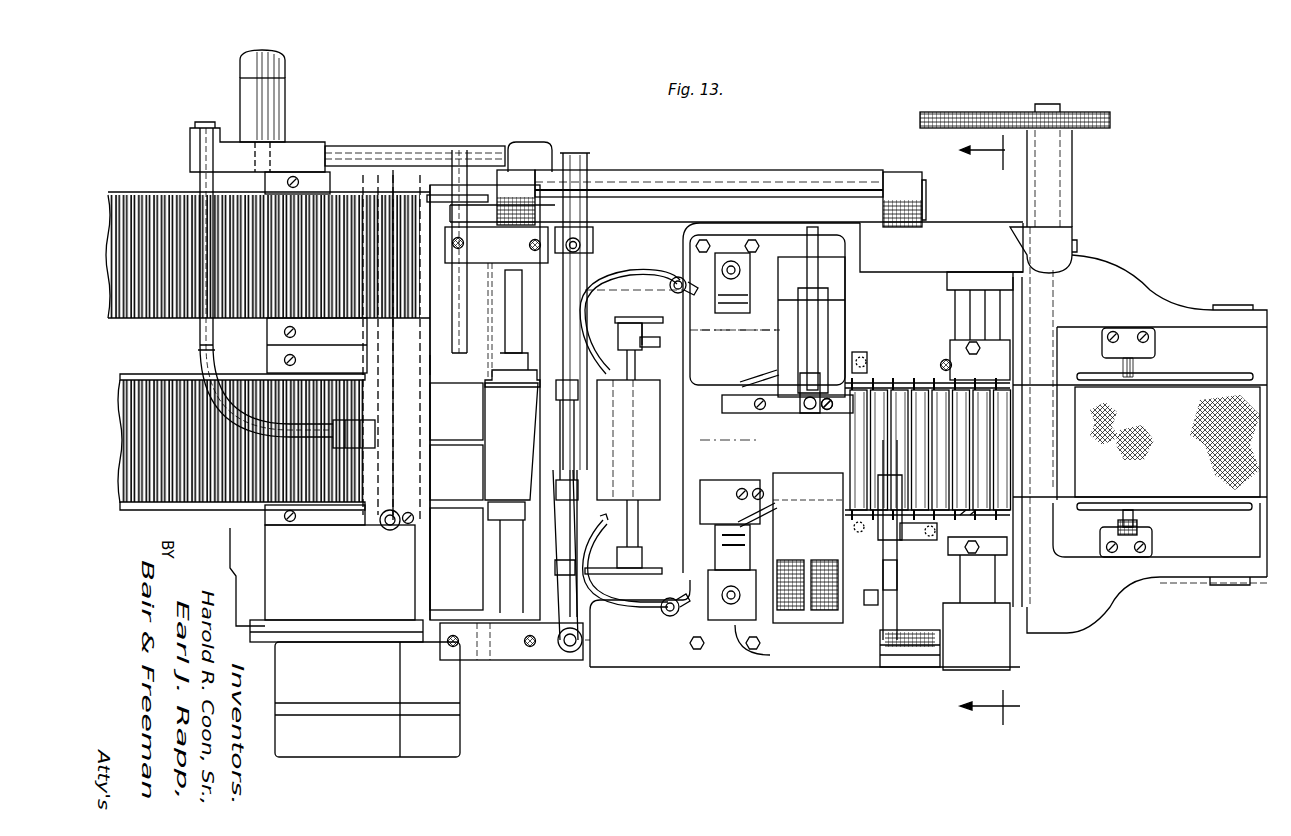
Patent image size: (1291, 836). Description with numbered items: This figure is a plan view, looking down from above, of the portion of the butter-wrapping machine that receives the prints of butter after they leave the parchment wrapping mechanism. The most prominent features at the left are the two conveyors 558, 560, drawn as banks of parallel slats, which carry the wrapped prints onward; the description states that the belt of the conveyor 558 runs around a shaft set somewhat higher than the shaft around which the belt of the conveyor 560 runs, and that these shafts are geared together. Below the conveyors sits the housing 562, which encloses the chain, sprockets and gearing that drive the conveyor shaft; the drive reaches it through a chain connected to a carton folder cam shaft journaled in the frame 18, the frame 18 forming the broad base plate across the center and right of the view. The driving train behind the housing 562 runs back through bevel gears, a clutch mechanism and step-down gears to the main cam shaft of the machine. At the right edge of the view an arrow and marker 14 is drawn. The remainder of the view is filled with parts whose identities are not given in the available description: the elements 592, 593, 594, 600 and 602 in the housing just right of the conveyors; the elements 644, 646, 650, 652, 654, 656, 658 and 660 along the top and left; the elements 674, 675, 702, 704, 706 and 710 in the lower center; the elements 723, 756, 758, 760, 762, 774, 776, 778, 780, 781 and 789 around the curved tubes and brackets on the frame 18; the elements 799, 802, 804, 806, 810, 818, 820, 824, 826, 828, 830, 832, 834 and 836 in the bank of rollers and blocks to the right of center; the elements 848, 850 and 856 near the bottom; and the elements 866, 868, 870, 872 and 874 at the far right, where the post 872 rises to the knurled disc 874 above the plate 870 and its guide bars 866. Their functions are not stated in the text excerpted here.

The conveyor 558 is at (162, 198).
The conveyor 560 is at (155, 388).
The housing 562 is at (378, 595).
The housing 592 is at (470, 425).
The housing wall 593 is at (453, 365).
The slide member 594 is at (475, 330).
The vertical rod 600 is at (459, 188).
The cap block 602 is at (444, 178).
The knurled knob 644 is at (285, 102).
The horizontal bar 646 is at (401, 150).
The vertical cylinder 650 is at (620, 173).
The horizontal rod 652 is at (777, 184).
The collar 654 is at (523, 178).
The pipe 656 is at (199, 333).
The bolt 658 is at (303, 460).
The lower housing section 660 is at (470, 500).
The housing section 674 is at (495, 445).
The spacer 675 is at (510, 372).
The rod 702 is at (557, 550).
The clamp 704 is at (555, 393).
The guide 706 is at (515, 440).
The housing 710 is at (640, 500).
The plate edge 723 is at (787, 666).
The tube clamp 756 is at (670, 288).
The tube clamp 758 is at (665, 614).
The bracket 760 is at (622, 337).
The rod 762 is at (605, 526).
The block 774 is at (605, 385).
The tube 776 is at (577, 293).
The frame top 778 is at (613, 222).
The plate 780 is at (805, 417).
The pivot 781 is at (810, 413).
The pin 789 is at (652, 330).
The tube 799 is at (596, 580).
The bolt assembly 802 is at (720, 323).
The bolt assembly 804 is at (736, 578).
The bar 806 is at (738, 380).
The housing 810 is at (844, 320).
The rod 818 is at (837, 284).
The block 820 is at (823, 556).
The roller bank 824 is at (908, 384).
The block 826 is at (928, 537).
The bracket 828 is at (952, 305).
The screw 830 is at (870, 355).
The screw 832 is at (830, 410).
The block 834 is at (853, 352).
The block 836 is at (898, 572).
The base block 848 is at (915, 653).
The rod 850 is at (900, 585).
The block 856 is at (866, 610).
The guide bar 866 is at (1217, 374).
The rollers 868 is at (990, 505).
The plate 870 is at (1172, 445).
The post 872 is at (1069, 181).
The knurled disc 874 is at (950, 112).
The section line 14 is at (990, 437).
The frame 18 is at (845, 660).